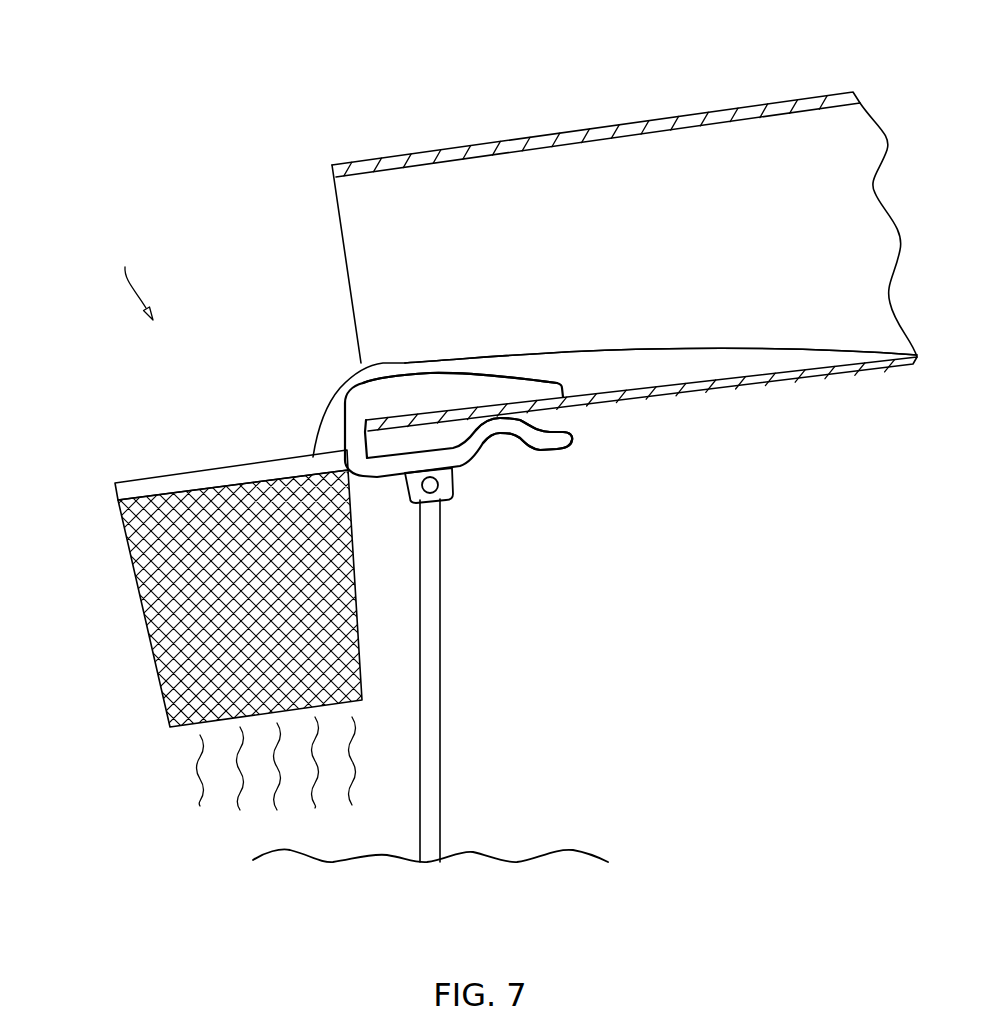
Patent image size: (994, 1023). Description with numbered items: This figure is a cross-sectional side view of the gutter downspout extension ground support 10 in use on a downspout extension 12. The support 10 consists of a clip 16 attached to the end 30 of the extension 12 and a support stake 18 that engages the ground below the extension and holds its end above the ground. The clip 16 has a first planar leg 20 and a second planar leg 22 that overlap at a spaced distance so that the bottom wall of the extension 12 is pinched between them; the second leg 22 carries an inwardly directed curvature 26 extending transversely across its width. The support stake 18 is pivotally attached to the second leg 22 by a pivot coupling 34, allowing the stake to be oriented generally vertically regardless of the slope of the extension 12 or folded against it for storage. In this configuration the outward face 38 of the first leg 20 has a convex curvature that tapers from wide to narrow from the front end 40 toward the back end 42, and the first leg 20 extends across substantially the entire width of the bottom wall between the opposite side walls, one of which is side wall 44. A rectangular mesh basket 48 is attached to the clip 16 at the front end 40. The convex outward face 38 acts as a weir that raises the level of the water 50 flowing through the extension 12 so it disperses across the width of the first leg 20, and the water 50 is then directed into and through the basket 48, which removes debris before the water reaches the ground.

The gutter downspout extension ground support 10 is at (132, 276).
The downspout extension 12 is at (468, 146).
The clip 16 is at (345, 410).
The support stake 18 is at (430, 805).
The first planar leg 20 is at (407, 392).
The second planar leg 22 is at (558, 443).
The inwardly directed curvature 26 is at (500, 443).
The end of the extension 30 is at (334, 188).
The pivot coupling 34 is at (577, 850).
The outward face of the first leg 38 is at (493, 373).
The front end of the first leg 40 is at (345, 434).
The back end of the first leg 42 is at (562, 385).
The side wall of the extension 44 is at (618, 207).
The basket 48 is at (127, 540).
The water 50 is at (692, 362).